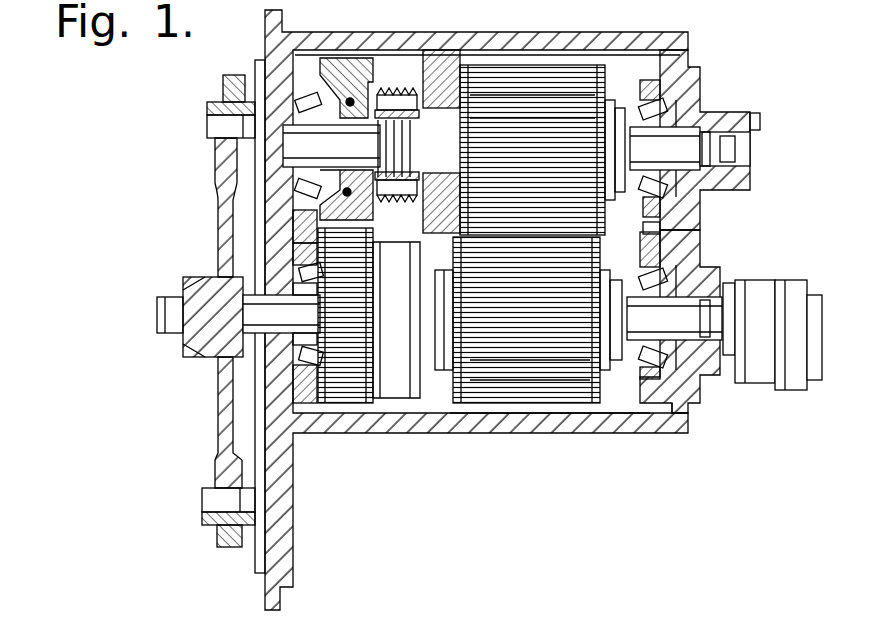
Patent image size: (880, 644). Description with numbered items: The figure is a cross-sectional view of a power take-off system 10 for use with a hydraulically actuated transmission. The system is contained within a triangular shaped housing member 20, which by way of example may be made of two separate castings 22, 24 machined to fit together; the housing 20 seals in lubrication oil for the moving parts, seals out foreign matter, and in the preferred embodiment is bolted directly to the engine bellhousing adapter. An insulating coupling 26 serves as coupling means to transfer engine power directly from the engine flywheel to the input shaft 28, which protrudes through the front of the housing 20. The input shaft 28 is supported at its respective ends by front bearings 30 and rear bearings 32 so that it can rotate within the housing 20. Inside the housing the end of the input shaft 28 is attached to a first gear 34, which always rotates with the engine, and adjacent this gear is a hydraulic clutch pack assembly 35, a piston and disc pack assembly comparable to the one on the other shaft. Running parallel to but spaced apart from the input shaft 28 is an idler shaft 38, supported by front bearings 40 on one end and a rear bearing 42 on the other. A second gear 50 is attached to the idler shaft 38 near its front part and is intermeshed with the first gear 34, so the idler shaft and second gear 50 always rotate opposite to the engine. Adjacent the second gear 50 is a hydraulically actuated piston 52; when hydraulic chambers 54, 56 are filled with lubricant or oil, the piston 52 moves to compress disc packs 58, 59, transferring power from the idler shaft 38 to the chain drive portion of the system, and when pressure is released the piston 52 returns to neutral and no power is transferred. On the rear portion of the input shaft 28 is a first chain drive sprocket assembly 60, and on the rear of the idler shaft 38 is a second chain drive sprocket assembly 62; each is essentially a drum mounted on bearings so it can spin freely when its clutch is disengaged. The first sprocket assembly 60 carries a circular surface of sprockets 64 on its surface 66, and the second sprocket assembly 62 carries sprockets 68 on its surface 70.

The power take-off system 10 is at (540, 408).
The housing member 20 is at (484, 432).
The casting 22 is at (620, 436).
The casting 24 is at (680, 420).
The insulating coupling 26 is at (228, 153).
The input shaft 28 is at (285, 316).
The front bearings 30 is at (305, 352).
The rear bearings 32 is at (668, 272).
The first gear 34 is at (368, 307).
The hydraulic clutch pack assembly 35 is at (385, 378).
The idler shaft 38 is at (340, 153).
The front bearings 40 is at (305, 103).
The rear bearing 42 is at (662, 110).
The second gear 50 is at (343, 60).
The hydraulically actuated piston 52 is at (395, 80).
The hydraulic chamber 54 is at (368, 85).
The hydraulic chamber 56 is at (367, 213).
The disc pack 58 is at (447, 272).
The disc pack 59 is at (445, 50).
The first chain drive sprocket assembly 60 is at (537, 347).
The second chain drive sprocket assembly 62 is at (542, 128).
The sprockets 64 is at (518, 395).
The surface 66 is at (470, 372).
The sprockets 68 is at (566, 118).
The surface 70 is at (546, 97).